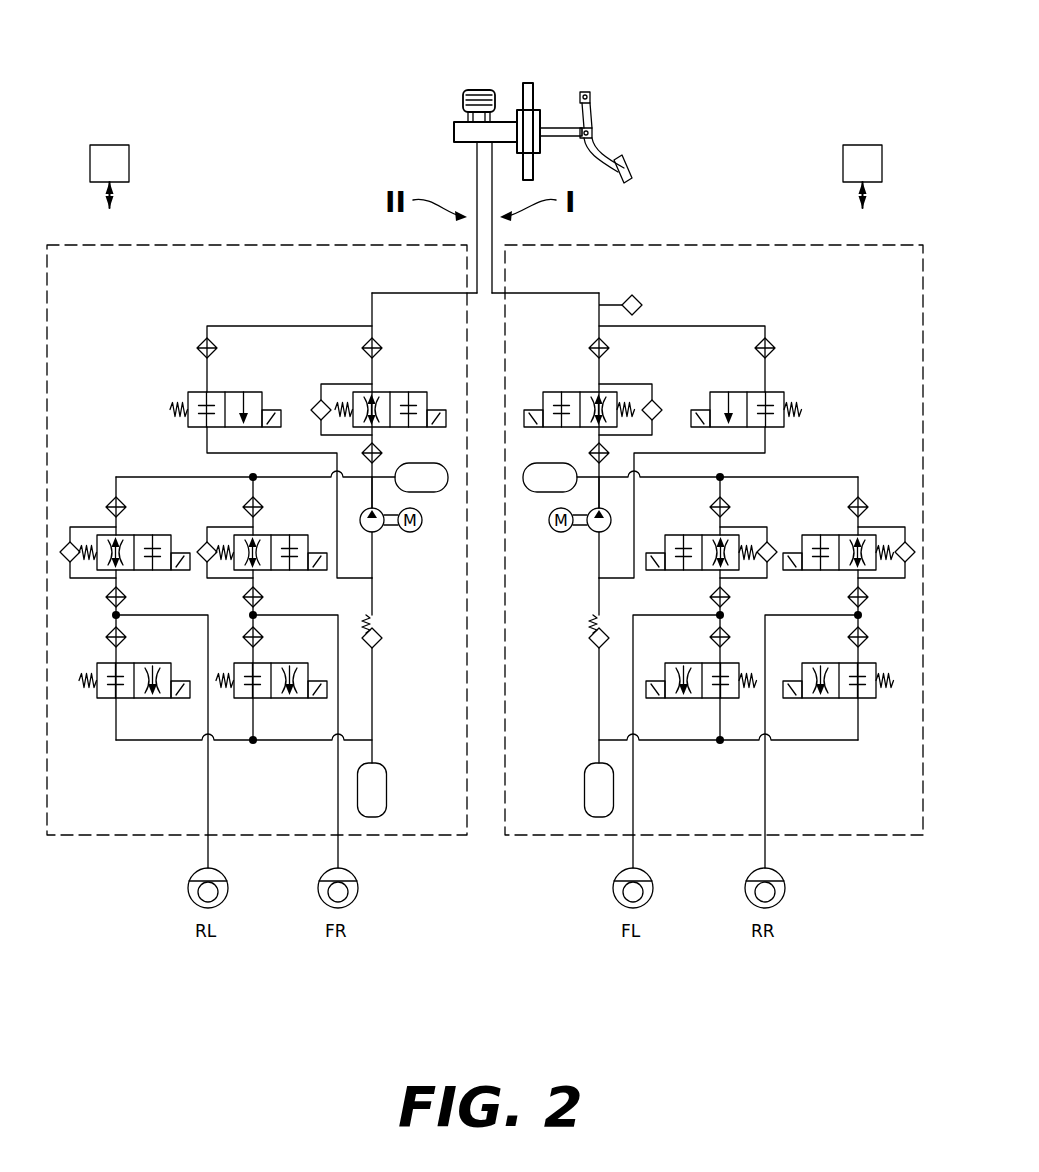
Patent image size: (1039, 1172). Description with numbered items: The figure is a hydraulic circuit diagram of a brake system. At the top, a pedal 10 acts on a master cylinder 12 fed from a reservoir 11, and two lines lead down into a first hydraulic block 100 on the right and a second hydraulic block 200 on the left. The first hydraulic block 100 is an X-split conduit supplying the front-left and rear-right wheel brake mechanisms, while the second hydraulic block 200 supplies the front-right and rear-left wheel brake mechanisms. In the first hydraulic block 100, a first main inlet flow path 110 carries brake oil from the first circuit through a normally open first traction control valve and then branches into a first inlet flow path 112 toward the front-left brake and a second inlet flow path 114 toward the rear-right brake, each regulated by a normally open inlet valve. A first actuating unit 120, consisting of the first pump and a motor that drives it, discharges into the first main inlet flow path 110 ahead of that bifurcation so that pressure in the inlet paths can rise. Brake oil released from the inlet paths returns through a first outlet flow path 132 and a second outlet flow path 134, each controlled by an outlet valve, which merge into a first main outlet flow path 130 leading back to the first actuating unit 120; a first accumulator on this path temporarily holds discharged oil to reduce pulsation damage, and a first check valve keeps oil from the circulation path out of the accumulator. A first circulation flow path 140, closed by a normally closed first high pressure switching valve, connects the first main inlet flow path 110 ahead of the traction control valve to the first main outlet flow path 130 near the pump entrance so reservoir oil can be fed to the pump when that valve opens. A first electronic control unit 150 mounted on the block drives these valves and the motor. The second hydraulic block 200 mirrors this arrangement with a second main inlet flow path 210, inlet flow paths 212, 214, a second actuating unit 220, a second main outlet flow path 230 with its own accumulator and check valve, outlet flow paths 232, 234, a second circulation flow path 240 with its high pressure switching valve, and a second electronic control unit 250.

The pedal 10 is at (600, 150).
The reservoir 11 is at (480, 90).
The master cylinder 12 is at (454, 130).
The first hydraulic block 100 is at (737, 245).
The first main inlet flow path 110 is at (565, 293).
The first inlet flow path 112 is at (722, 479).
The second inlet flow path 114 is at (828, 477).
The first actuating unit 120 is at (560, 538).
The first main outlet flow path 130 is at (598, 680).
The first outlet flow path 132 is at (720, 705).
The second outlet flow path 134 is at (813, 740).
The first circulation flow path 140 is at (690, 326).
The first electronic control unit 150 is at (860, 145).
The second hydraulic block 200 is at (278, 245).
The second main inlet flow path 210 is at (407, 293).
The second block first inlet flow path 212 is at (253, 479).
The second block second inlet flow path 214 is at (150, 477).
The second actuating unit 220 is at (415, 538).
The second main outlet flow path 230 is at (373, 680).
The second block first outlet flow path 232 is at (254, 705).
The second block second outlet flow path 234 is at (157, 740).
The second circulation flow path 240 is at (272, 326).
The second electronic control unit 250 is at (110, 145).